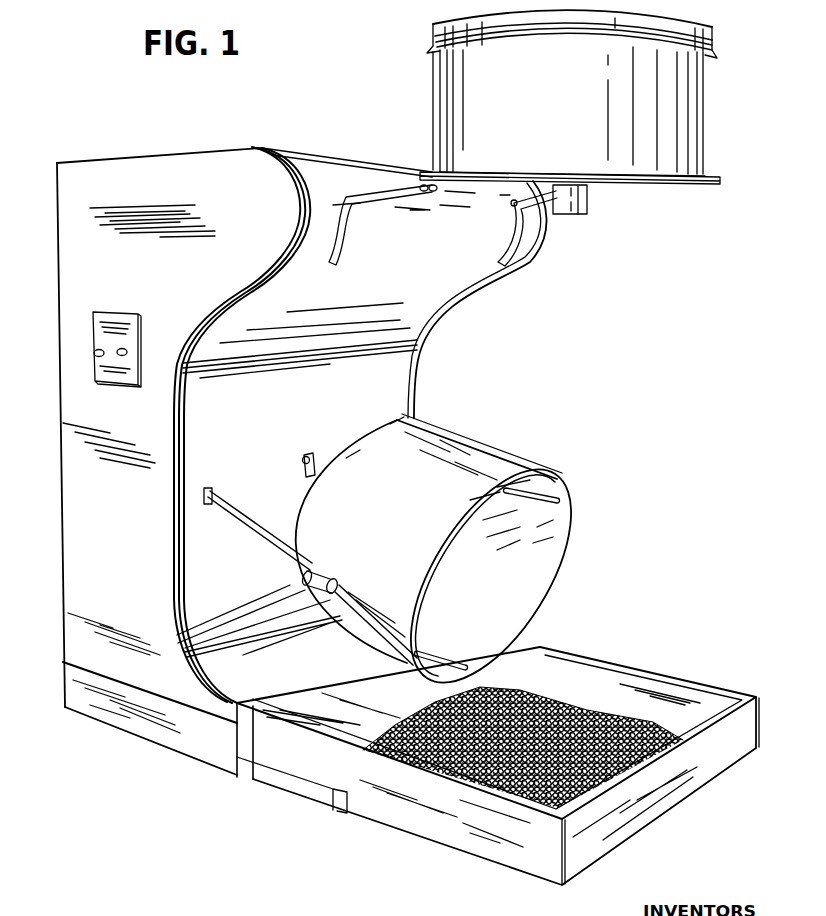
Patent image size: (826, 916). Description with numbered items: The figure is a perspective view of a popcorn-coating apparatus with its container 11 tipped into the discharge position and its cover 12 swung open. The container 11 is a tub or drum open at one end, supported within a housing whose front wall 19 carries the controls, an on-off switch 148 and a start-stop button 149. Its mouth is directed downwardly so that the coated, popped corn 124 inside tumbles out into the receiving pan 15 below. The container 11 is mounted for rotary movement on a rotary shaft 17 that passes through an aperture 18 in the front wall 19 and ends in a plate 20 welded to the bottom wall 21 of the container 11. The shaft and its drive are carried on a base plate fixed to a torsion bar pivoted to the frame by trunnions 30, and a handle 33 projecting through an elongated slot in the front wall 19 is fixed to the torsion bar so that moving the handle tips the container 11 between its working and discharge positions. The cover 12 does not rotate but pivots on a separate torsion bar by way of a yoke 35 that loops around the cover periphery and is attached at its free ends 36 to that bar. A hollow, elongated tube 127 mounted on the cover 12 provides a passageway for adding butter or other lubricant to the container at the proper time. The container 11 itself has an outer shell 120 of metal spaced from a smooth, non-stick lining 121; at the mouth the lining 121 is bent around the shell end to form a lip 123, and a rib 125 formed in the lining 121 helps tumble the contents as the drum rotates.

The container 11 is at (479, 426).
The cover 12 is at (428, 89).
The receiving pan 15 is at (420, 818).
The rotary shaft 17 is at (316, 464).
The aperture 18 is at (305, 459).
The front wall 19 is at (322, 396).
The plate 20 is at (353, 452).
The bottom wall 21 is at (397, 421).
The trunnions 30 is at (210, 488).
The handle 33 is at (266, 547).
The yoke 35 is at (567, 174).
The free ends 36 is at (380, 178).
The outer shell 120 is at (512, 452).
The lining 121 is at (530, 588).
The lip 123 is at (558, 479).
The coated, popped corn 124 is at (575, 705).
The rib 125 is at (548, 500).
The hollow, elongated tube 127 is at (588, 205).
The on-off switch 148 is at (125, 350).
The start-stop button 149 is at (95, 352).